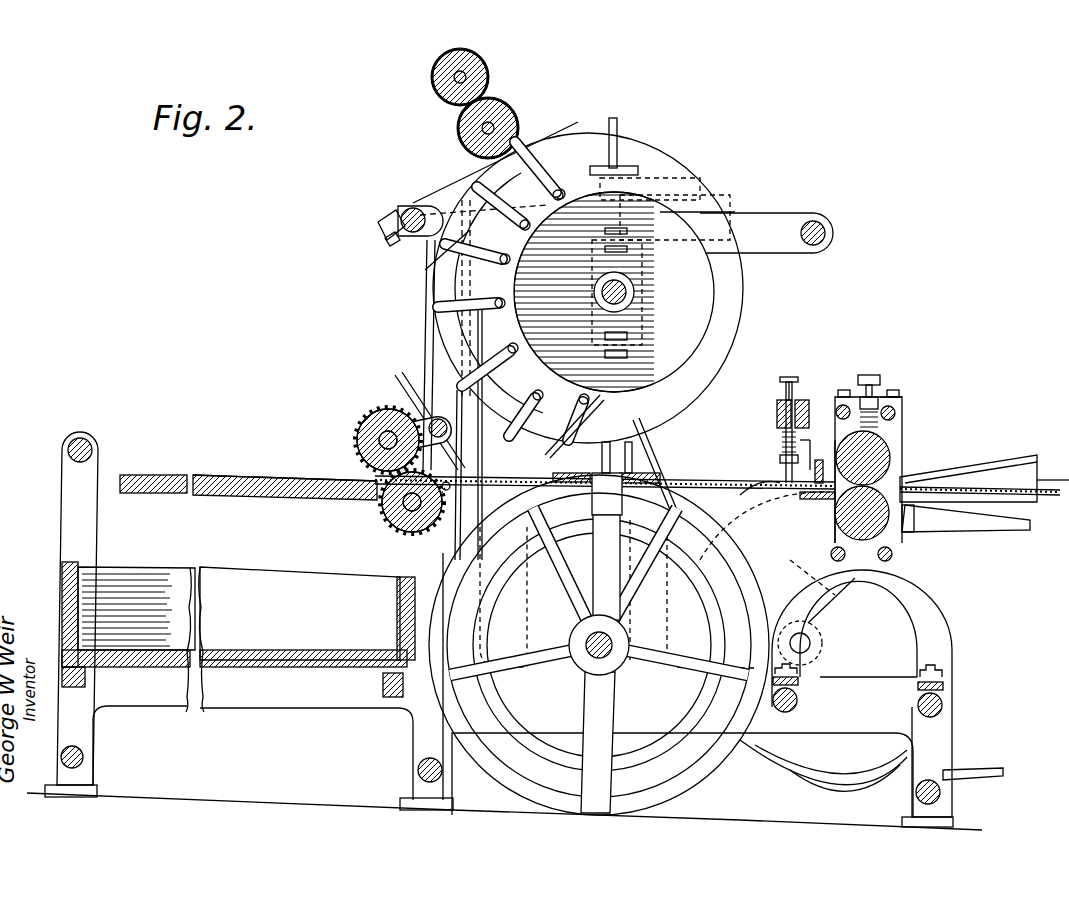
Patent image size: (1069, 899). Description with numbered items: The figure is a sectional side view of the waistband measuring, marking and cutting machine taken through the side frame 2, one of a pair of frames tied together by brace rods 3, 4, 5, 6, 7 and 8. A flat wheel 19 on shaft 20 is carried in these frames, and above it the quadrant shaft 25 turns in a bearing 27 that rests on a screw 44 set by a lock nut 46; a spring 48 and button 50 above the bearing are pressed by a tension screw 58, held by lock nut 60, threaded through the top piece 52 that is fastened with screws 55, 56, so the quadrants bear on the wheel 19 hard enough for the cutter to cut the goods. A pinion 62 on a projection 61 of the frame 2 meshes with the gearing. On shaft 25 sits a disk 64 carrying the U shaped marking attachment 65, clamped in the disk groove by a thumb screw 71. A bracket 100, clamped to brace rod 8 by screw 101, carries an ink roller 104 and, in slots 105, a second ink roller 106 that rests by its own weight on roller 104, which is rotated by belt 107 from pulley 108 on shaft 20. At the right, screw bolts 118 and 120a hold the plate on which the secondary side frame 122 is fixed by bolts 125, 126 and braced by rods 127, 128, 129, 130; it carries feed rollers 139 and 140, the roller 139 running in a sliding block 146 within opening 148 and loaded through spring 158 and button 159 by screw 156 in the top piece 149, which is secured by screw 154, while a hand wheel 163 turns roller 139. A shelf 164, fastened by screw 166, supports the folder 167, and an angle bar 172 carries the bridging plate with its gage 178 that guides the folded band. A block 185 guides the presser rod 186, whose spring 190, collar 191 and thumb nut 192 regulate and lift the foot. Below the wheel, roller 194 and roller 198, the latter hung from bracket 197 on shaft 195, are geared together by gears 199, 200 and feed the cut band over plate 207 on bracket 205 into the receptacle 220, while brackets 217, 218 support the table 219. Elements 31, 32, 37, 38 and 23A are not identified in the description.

The side frame 2 is at (345, 700).
The brace rod 3 is at (943, 793).
The brace rod 4 is at (417, 771).
The brace rod 5 is at (85, 757).
The brace rod 6 is at (90, 447).
The brace rod 7 is at (828, 233).
The brace rod 8 is at (410, 208).
The flat wheel 19 is at (800, 520).
The shaft 20 is at (599, 645).
The shaft 25 is at (636, 292).
The bearing 27 is at (640, 300).
The strut 31 is at (640, 448).
The strut 32 is at (660, 427).
The column 37 is at (622, 512).
The standard 38 is at (605, 578).
The screw 44 is at (630, 340).
The lock nut 46 is at (630, 355).
The spring 48 is at (630, 254).
The button 50 is at (630, 236).
The top piece 52 is at (690, 200).
The screw 55 is at (560, 190).
The screw 56 is at (660, 185).
The tension screw 58 is at (628, 168).
The lock nut 60 is at (700, 212).
The projection 61 is at (820, 668).
The pinion 62 is at (835, 780).
The disk 64 is at (742, 290).
The U shaped piece 65 is at (440, 304).
The thumb screw 71 is at (540, 198).
The bracket 100 is at (462, 180).
The screw 101 is at (380, 218).
The ink roller 104 is at (508, 118).
The slots 105 is at (440, 70).
The ink roller 106 is at (492, 72).
The belt 107 is at (682, 470).
The pulley 108 is at (560, 612).
The screw bolt 118 is at (955, 712).
The screw bolt 120a is at (820, 725).
The secondary side frame 122 is at (940, 615).
The bolt 125 is at (955, 668).
The bolt 126 is at (795, 690).
The brace rod 127 is at (893, 554).
The brace rod 128 is at (830, 552).
The brace rod 129 is at (898, 413).
The brace rod 130 is at (855, 388).
The roller 139 is at (892, 458).
The roller 140 is at (880, 580).
The sliding block 146 is at (838, 445).
The opening 148 is at (905, 428).
The top piece 149 is at (905, 408).
The screw 154 is at (842, 395).
The screw 156 is at (872, 375).
The spring 158 is at (880, 430).
The button 159 is at (880, 395).
The hand wheel 163 is at (895, 390).
The shelf 164 is at (960, 525).
The screw 166 is at (912, 522).
The folder 167 is at (1010, 462).
The angle bar 172 is at (800, 500).
The gage 178 is at (764, 471).
The block 185 is at (800, 408).
The rod 186 is at (788, 395).
The spring 190 is at (780, 427).
The collar 191 is at (782, 450).
The thumb nut 192 is at (795, 378).
The roller 194 is at (400, 520).
The shaft 195 is at (442, 417).
The bracket 197 is at (410, 415).
The roller 198 is at (355, 436).
The gear 199 is at (380, 410).
The gear 200 is at (380, 512).
The bracket 205 is at (450, 512).
The plate 207 is at (515, 478).
The bracket 217 is at (135, 494).
The bracket 218 is at (258, 498).
The table 219 is at (220, 495).
The receptacle 220 is at (238, 637).
The guide 23A is at (760, 500).